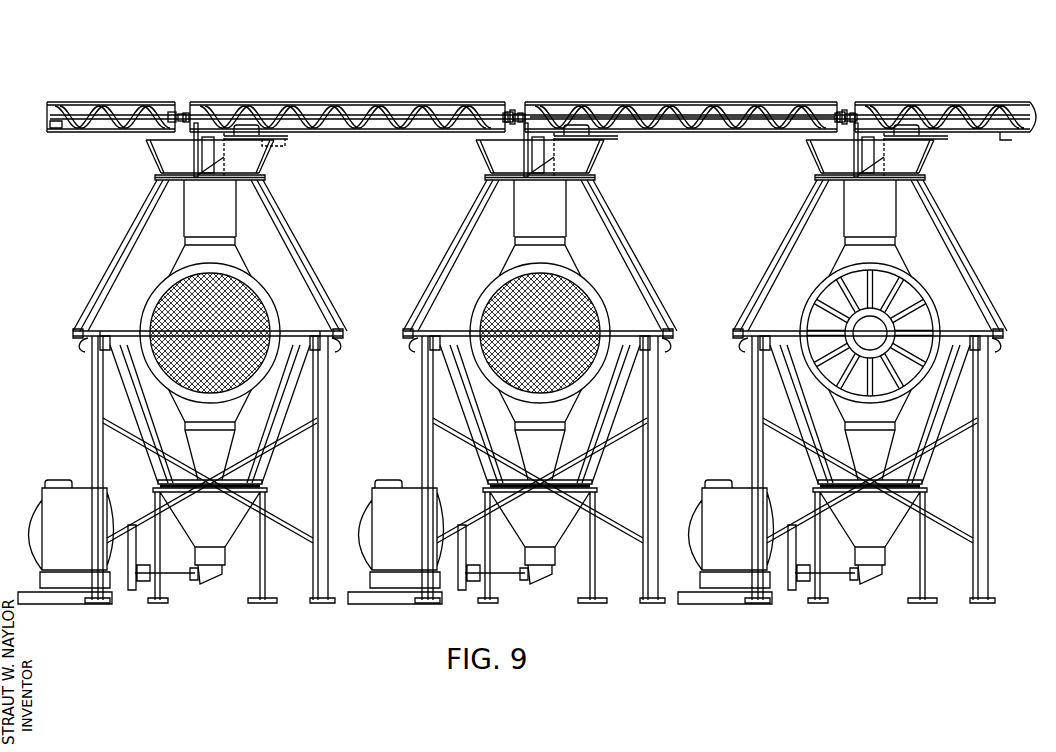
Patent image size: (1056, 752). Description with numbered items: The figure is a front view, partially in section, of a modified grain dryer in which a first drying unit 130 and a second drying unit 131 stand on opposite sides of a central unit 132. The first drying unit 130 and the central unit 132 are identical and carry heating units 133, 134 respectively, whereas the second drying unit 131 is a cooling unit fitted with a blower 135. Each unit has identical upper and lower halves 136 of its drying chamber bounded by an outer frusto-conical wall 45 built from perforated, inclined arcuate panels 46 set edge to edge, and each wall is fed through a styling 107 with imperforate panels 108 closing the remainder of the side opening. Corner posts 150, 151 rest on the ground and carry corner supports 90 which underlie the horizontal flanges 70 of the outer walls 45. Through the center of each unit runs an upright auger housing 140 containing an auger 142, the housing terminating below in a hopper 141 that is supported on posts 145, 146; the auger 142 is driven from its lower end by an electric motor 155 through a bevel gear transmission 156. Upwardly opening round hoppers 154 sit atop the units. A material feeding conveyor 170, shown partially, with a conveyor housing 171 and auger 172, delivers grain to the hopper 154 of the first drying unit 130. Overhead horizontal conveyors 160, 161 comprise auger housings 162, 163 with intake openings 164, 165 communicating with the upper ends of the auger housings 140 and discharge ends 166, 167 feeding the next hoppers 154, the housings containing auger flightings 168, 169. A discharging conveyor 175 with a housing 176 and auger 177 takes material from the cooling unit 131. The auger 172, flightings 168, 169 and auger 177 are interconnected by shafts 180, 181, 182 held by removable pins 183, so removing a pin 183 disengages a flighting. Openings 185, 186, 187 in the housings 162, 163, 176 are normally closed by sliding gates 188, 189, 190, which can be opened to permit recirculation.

The outer frusto-conical wall 45 is at (126, 263).
The perforated panel 46 is at (535, 285).
The horizontal flange 70 is at (340, 330).
The corner support 90 is at (83, 346).
The styling 107 is at (240, 257).
The imperforate panel 108 is at (214, 222).
The first drying unit 130 is at (318, 270).
The second drying unit 131 is at (962, 240).
The central unit 132 is at (642, 250).
The heating unit 133 is at (263, 313).
The heating unit 134 is at (590, 305).
The blower 135 is at (922, 320).
The upper and lower halves of drying chamber 136 is at (290, 262).
The upright auger housing 140 is at (216, 158).
The hopper 141 is at (228, 548).
The auger 142 is at (215, 168).
The post 145 is at (168, 602).
The post 146 is at (276, 602).
The corner post 150 is at (92, 448).
The corner post 151 is at (328, 438).
The upper hopper 154 is at (262, 148).
The electric motor 155 is at (48, 497).
The bevel gear transmission 156 is at (222, 577).
The overhead horizontal conveyor 160 is at (353, 100).
The overhead horizontal conveyor 161 is at (705, 100).
The auger housing 162 is at (272, 105).
The auger housing 163 is at (638, 105).
The intake opening 164 is at (210, 134).
The intake opening 165 is at (538, 132).
The discharge end 166 is at (512, 110).
The discharge end 167 is at (845, 110).
The auger flighting 168 is at (410, 118).
The auger flighting 169 is at (752, 118).
The material feeding conveyor 170 is at (82, 99).
The conveyor housing 171 is at (105, 110).
The auger 172 is at (112, 125).
The discharging conveyor 175 is at (957, 100).
The housing 176 is at (1003, 135).
The auger 177 is at (1003, 104).
The shaft 180 is at (180, 113).
The shaft 181 is at (516, 112).
The shaft 182 is at (850, 116).
The removable pin 183 is at (185, 112).
The opening 185 is at (252, 128).
The opening 186 is at (582, 128).
The opening 187 is at (910, 126).
The sliding gate 188 is at (286, 142).
The sliding gate 189 is at (612, 139).
The sliding gate 190 is at (948, 139).